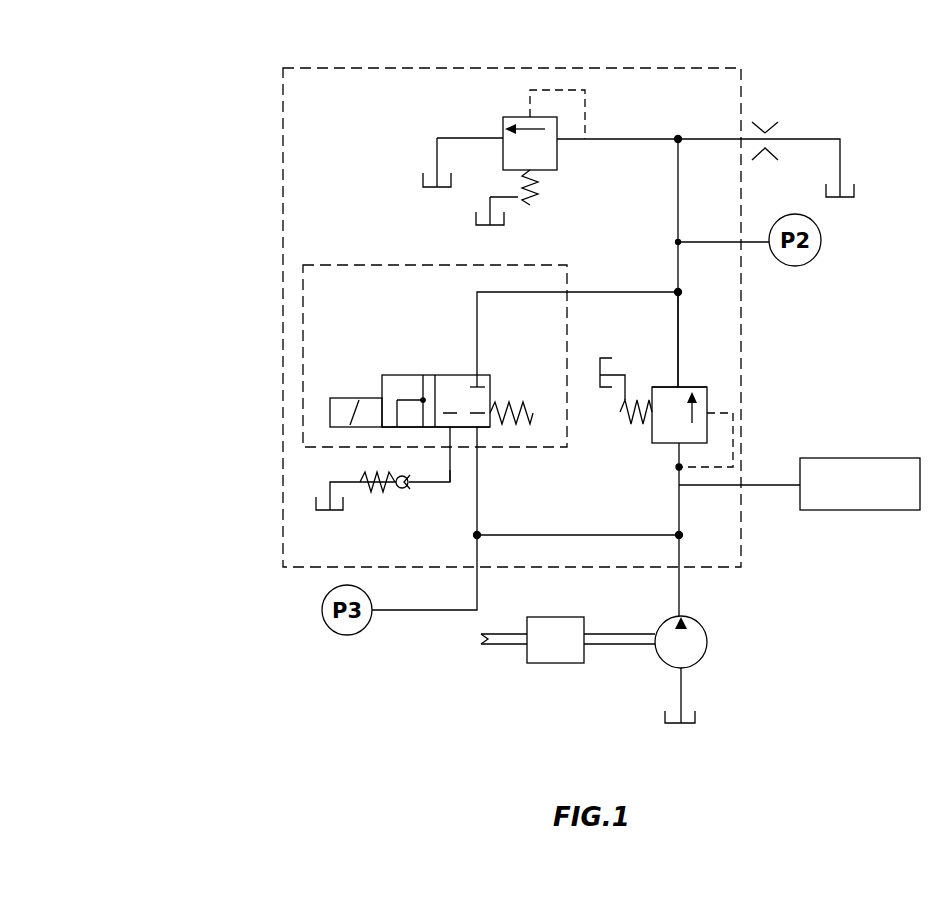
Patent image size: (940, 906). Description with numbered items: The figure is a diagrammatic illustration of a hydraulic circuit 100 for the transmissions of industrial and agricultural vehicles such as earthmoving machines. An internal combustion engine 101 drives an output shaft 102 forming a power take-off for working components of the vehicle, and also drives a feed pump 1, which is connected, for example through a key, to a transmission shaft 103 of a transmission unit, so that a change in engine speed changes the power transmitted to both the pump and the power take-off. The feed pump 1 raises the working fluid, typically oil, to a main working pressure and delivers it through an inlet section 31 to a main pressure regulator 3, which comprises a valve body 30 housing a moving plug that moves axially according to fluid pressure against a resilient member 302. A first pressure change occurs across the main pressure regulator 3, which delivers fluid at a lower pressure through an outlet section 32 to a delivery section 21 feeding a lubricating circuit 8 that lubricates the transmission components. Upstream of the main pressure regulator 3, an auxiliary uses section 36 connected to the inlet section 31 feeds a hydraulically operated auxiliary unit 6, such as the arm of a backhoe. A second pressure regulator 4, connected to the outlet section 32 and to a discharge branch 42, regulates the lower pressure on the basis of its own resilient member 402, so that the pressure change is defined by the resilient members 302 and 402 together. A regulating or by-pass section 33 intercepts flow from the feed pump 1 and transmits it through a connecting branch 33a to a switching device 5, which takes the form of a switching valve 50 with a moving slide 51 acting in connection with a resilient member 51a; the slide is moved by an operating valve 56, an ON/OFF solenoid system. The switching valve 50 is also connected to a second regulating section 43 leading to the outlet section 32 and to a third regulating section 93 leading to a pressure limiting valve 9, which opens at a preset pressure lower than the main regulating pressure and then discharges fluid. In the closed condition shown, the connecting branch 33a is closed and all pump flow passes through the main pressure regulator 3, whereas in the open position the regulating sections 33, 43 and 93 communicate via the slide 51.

The hydraulic circuit 100 is at (160, 170).
The feed pump 1 is at (707, 638).
The main pressure regulator 3 is at (707, 395).
The second pressure regulator 4 is at (511, 117).
The switching device 5 is at (303, 295).
The hydraulically operated auxiliary unit 6 is at (900, 458).
The lubricating circuit 8 is at (805, 139).
The pressure limiting valve 9 is at (368, 493).
The delivery section 21 is at (710, 139).
The valve body 30 is at (688, 387).
The inlet section 31 is at (682, 510).
The outlet section 32 is at (683, 321).
The regulating or by-pass section 33 is at (508, 537).
The connecting branch 33a is at (480, 478).
The auxiliary uses section 36 is at (767, 485).
The discharge branch 42 is at (452, 138).
The second regulating section 43 is at (503, 292).
The switching valve 50 is at (390, 428).
The moving slide 51 is at (405, 412).
The resilient member 51a is at (507, 392).
The operating valve 56 is at (330, 413).
The third regulating section 93 is at (430, 484).
The internal combustion engine 101 is at (552, 663).
The output shaft 102 is at (505, 645).
The transmission shaft 103 is at (630, 648).
The resilient member 302 is at (732, 446).
The resilient member 402 is at (546, 172).